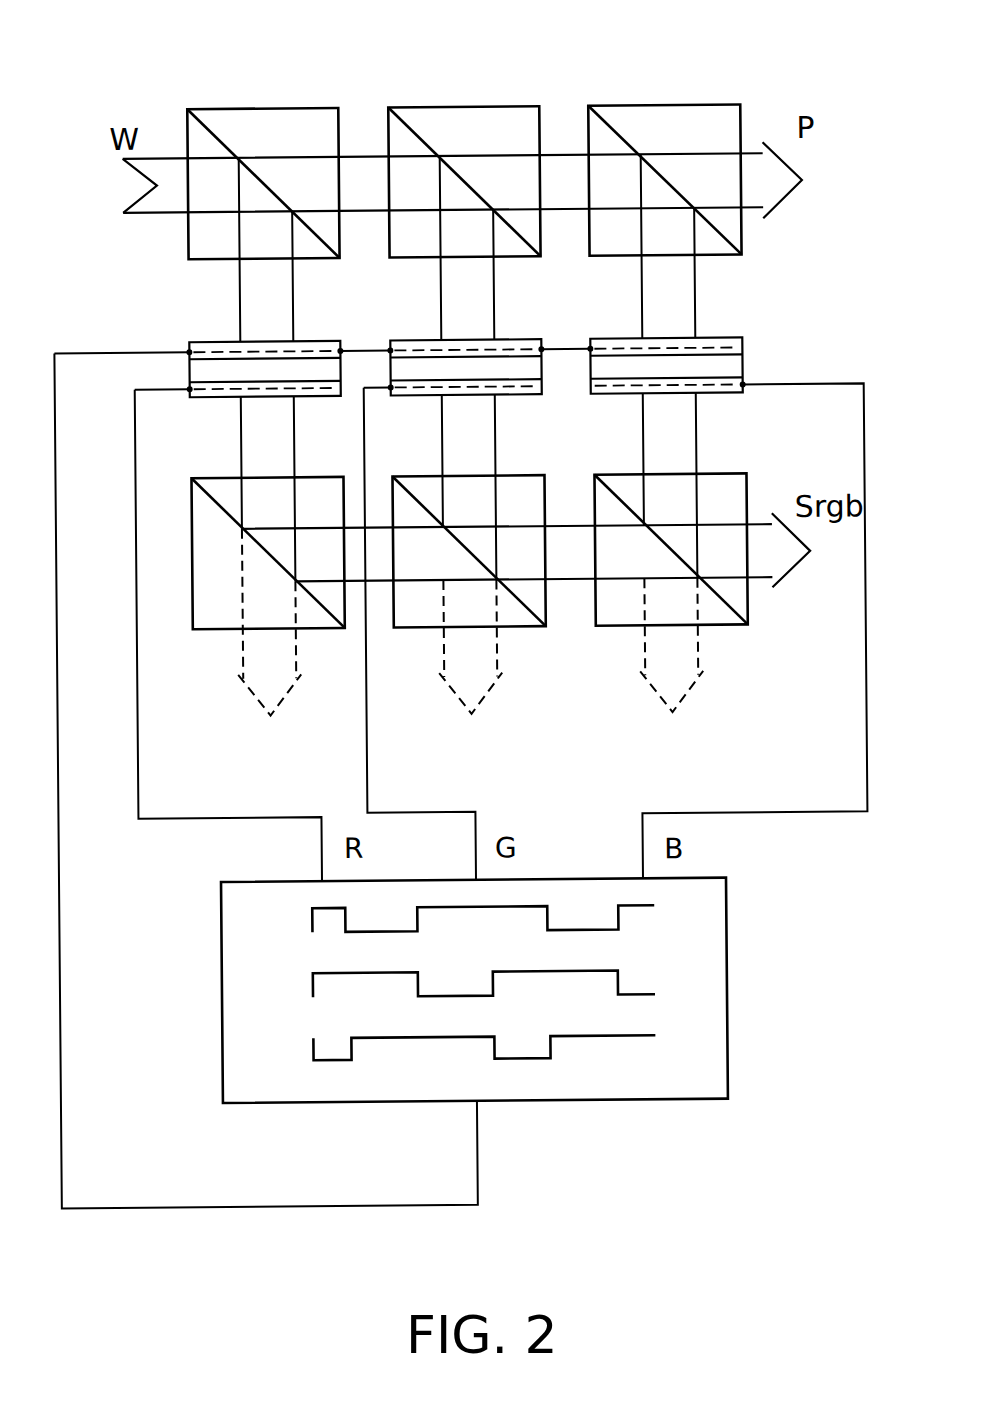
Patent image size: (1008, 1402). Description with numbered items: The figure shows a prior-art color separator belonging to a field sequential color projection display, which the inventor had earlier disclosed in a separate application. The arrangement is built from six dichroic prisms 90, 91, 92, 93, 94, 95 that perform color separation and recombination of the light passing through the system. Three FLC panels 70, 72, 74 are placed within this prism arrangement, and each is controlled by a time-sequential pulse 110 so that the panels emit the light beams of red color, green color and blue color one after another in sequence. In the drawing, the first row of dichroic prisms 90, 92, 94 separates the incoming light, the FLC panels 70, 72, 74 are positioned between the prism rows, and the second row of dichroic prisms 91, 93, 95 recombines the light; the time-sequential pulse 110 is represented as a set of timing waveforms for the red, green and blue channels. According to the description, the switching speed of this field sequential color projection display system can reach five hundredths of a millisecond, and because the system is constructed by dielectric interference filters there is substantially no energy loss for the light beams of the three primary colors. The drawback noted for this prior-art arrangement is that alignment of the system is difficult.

The dichroic prism 90 is at (294, 123).
The dichroic prism 92 is at (493, 123).
The dichroic prism 94 is at (695, 120).
The FLC panel 70 is at (211, 340).
The FLC panel 72 is at (412, 340).
The FLC panel 74 is at (612, 340).
The dichroic prism 91 is at (336, 592).
The dichroic prism 93 is at (536, 591).
The dichroic prism 95 is at (738, 591).
The time-sequential pulse 110 is at (219, 991).